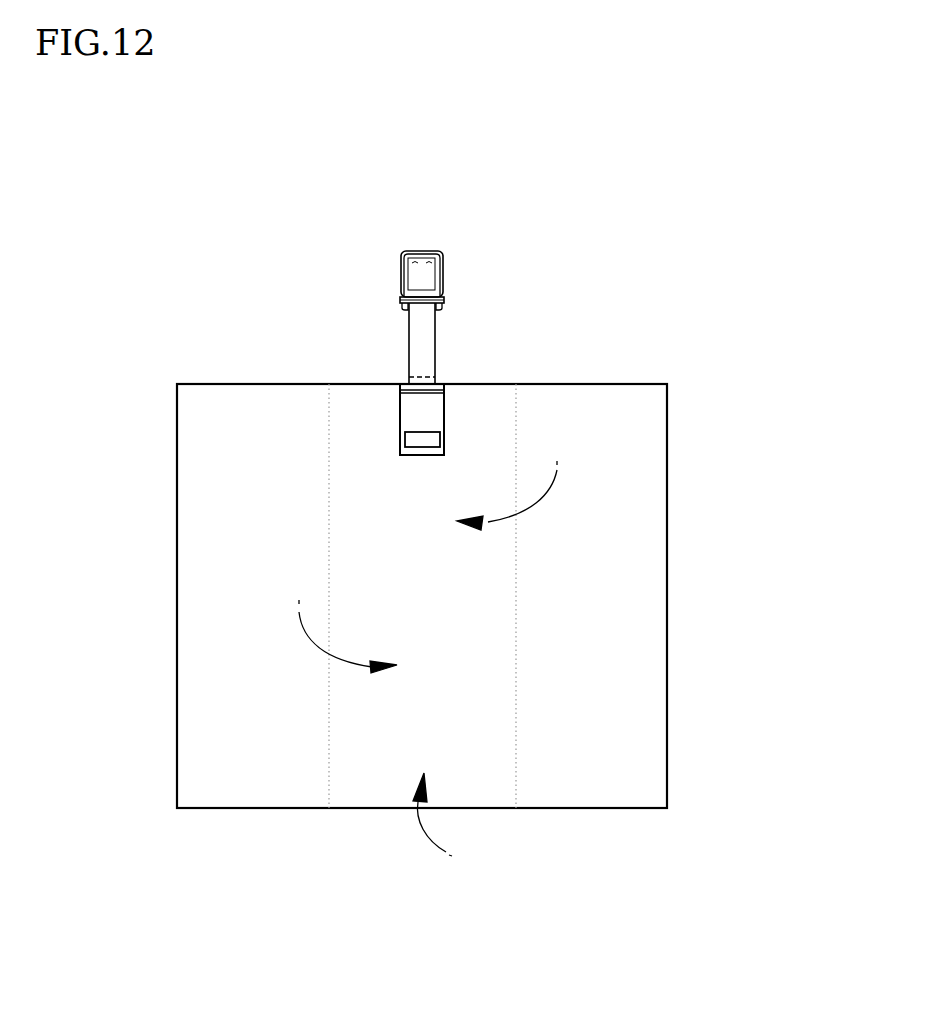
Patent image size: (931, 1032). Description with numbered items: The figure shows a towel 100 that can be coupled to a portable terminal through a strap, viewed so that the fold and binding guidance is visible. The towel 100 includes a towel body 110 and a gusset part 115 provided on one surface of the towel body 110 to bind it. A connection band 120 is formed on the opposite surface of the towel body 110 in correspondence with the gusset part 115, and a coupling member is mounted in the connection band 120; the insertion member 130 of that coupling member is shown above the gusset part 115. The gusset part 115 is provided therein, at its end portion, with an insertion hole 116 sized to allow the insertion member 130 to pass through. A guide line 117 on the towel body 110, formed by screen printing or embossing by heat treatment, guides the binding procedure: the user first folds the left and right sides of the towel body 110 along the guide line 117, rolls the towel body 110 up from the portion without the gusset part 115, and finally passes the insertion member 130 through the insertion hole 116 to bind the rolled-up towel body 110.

The towel 100 is at (697, 408).
The towel body 110 is at (647, 680).
The gusset part 115 is at (399, 407).
The insertion hole 116 is at (427, 442).
The guide line 117 is at (516, 568).
The connection band 120 is at (430, 331).
The insertion member 130 is at (432, 276).